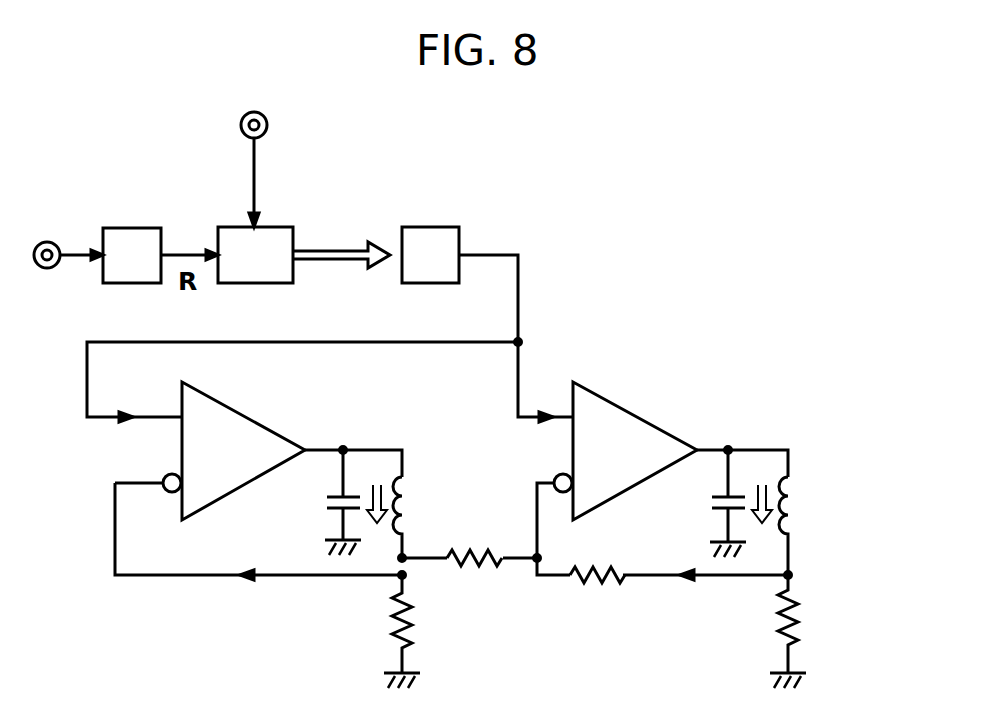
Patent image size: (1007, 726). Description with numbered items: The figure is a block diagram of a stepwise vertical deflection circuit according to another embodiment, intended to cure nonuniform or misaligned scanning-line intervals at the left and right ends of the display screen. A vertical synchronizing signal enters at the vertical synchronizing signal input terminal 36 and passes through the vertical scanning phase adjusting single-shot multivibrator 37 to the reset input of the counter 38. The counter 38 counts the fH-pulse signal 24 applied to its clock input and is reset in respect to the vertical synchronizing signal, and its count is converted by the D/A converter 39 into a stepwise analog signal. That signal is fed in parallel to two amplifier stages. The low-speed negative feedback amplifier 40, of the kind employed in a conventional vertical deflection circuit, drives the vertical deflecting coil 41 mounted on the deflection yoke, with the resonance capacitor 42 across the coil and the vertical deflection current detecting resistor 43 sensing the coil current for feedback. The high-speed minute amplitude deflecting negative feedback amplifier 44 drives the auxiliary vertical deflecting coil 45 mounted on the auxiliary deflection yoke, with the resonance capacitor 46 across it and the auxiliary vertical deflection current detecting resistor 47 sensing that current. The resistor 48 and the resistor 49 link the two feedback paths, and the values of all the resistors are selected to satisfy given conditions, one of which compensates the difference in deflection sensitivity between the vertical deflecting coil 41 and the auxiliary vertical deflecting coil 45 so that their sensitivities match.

The fH-pulse signal 24 is at (268, 125).
The vertical synchronizing signal input terminal 36 is at (47, 242).
The vertical scanning phase adjusting single-shot multivibrator 37 is at (125, 228).
The counter 38 is at (283, 227).
The D/A converter 39 is at (428, 227).
The low-speed negative feedback amplifier 40 is at (255, 420).
The vertical deflecting coil 41 is at (417, 473).
The resonance capacitor 42 is at (318, 502).
The vertical deflection current detecting resistor 43 is at (383, 613).
The high-speed minute amplitude deflecting negative feedback amplifier 44 is at (618, 403).
The auxiliary vertical deflecting coil 45 is at (808, 493).
The resonance capacitor 46 is at (712, 500).
The auxiliary vertical deflection current detecting resistor 47 is at (808, 612).
The resistor 48 is at (482, 578).
The resistor 49 is at (590, 593).